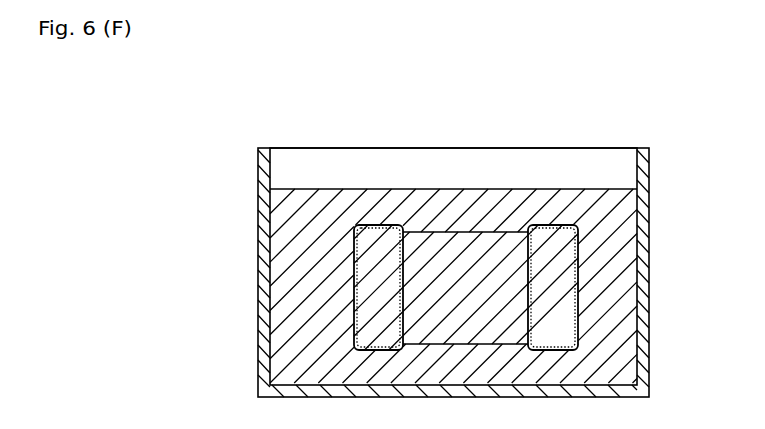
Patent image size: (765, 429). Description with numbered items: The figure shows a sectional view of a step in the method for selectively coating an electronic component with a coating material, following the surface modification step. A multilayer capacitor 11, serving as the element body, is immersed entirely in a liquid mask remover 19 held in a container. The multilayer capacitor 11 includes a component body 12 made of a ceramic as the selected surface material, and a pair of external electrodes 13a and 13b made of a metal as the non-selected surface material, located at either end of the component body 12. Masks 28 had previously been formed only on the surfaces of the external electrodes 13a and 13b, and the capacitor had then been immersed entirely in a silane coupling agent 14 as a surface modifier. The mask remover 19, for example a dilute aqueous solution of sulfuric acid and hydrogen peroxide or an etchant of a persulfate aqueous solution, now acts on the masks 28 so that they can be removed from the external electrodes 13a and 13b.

The multilayer capacitor 11 is at (380, 209).
The component body 12 is at (446, 274).
The external electrode 13a is at (375, 320).
The external electrode 13b is at (553, 322).
The silane coupling agent 14 is at (470, 273).
The mask remover 19 is at (304, 222).
The mask 28 is at (375, 290).